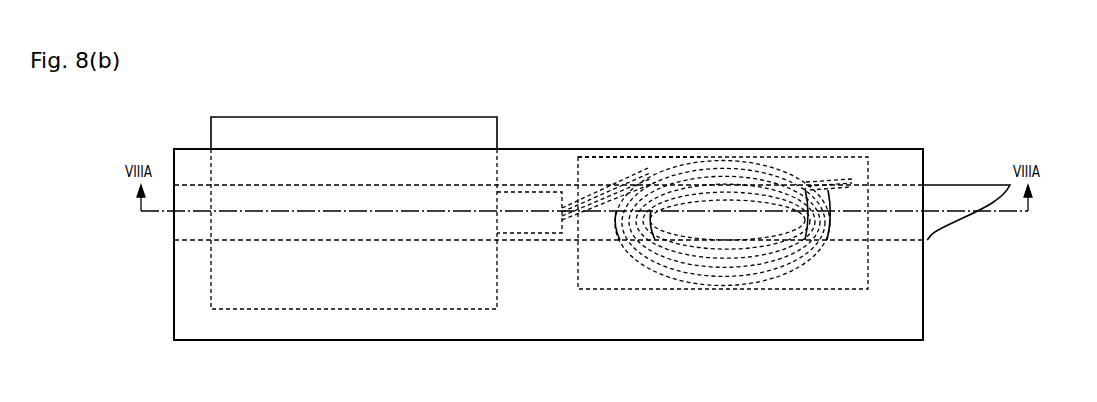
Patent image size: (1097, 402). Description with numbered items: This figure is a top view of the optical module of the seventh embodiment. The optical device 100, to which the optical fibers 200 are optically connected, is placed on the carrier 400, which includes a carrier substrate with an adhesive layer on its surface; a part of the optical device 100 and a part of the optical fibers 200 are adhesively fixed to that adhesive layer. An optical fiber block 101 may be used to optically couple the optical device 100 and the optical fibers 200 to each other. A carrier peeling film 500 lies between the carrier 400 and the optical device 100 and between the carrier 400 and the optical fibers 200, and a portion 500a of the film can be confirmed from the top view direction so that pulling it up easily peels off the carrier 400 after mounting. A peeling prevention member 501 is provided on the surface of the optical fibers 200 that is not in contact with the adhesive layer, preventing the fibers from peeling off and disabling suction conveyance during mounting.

The optical device 100 is at (356, 311).
The optical fiber block 101 is at (523, 228).
The optical fibers 200 is at (707, 288).
The carrier 400 is at (910, 147).
The carrier peeling film 500 is at (858, 223).
The portion of the film 500a is at (958, 195).
The peeling prevention member 501 is at (598, 175).